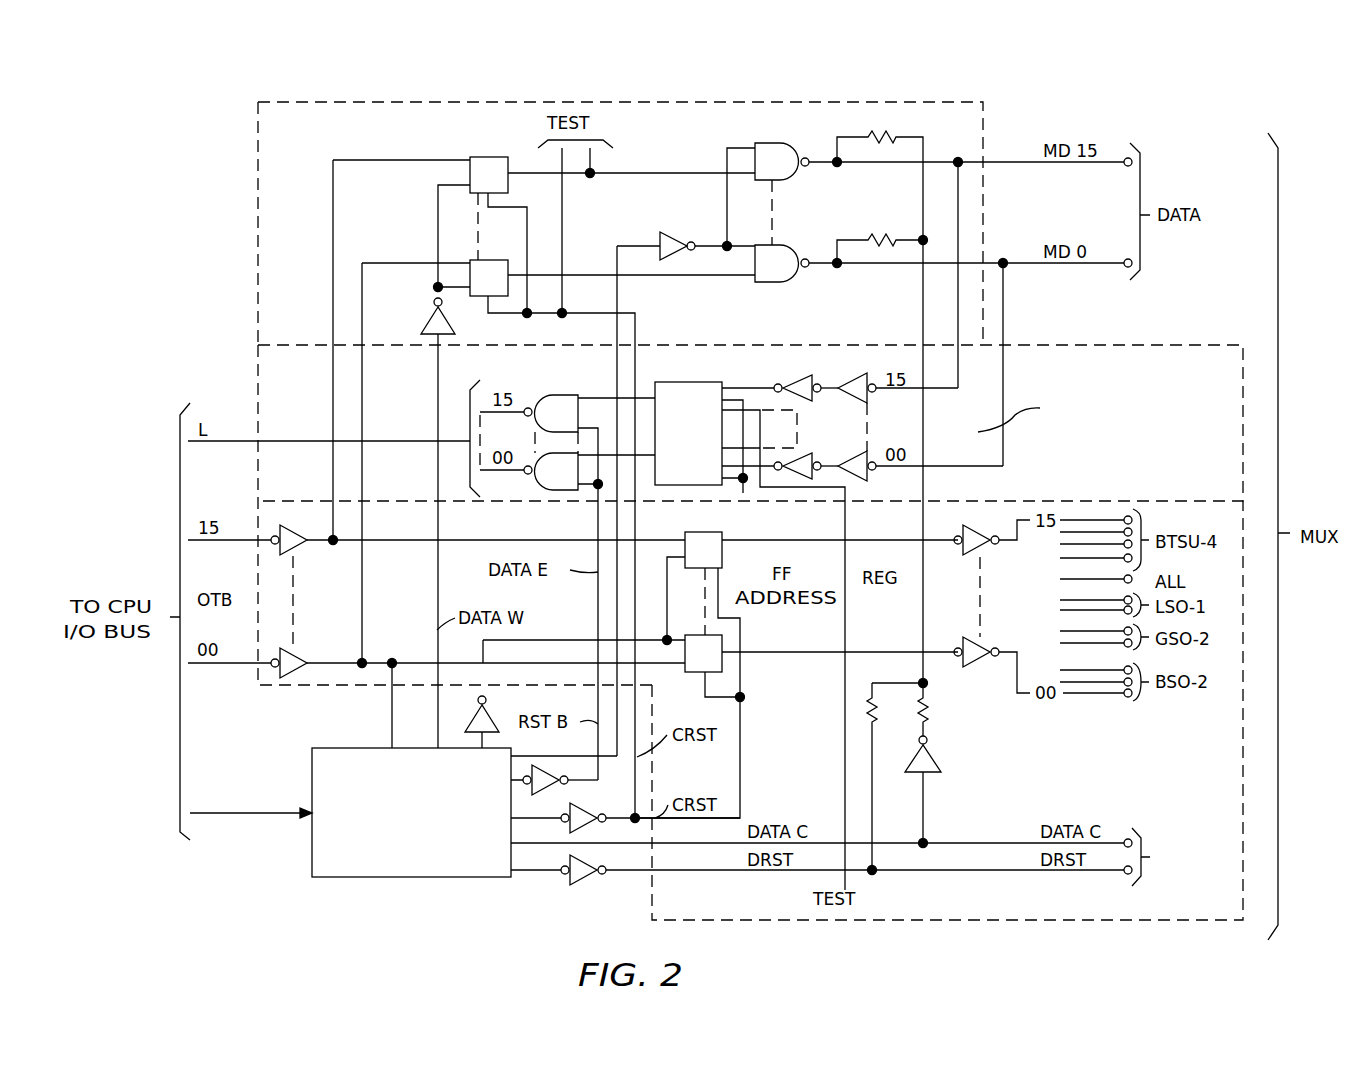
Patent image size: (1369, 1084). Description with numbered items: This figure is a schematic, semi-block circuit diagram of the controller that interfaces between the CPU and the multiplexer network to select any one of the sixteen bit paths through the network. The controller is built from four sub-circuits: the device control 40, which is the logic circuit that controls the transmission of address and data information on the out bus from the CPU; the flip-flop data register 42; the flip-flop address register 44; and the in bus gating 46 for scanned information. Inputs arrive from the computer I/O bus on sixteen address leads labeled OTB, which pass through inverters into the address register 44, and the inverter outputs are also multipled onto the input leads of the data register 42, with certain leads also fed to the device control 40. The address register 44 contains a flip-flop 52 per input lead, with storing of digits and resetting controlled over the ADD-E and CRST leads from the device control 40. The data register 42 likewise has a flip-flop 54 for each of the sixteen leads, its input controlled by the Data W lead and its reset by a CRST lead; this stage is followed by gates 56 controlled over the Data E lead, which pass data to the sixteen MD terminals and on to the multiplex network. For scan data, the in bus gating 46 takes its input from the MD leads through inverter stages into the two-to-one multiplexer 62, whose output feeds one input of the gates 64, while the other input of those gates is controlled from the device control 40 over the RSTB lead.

The device control 40 is at (420, 864).
The flip-flop data register 42 is at (983, 214).
The flip-flop address register 44 is at (1097, 924).
The in bus gating 46 is at (1185, 348).
The flip-flop 52 is at (716, 531).
The flip-flop 54 is at (470, 260).
The gate 56 is at (783, 282).
The two-to-one multiplexer 62 is at (680, 381).
The gate 64 is at (560, 393).